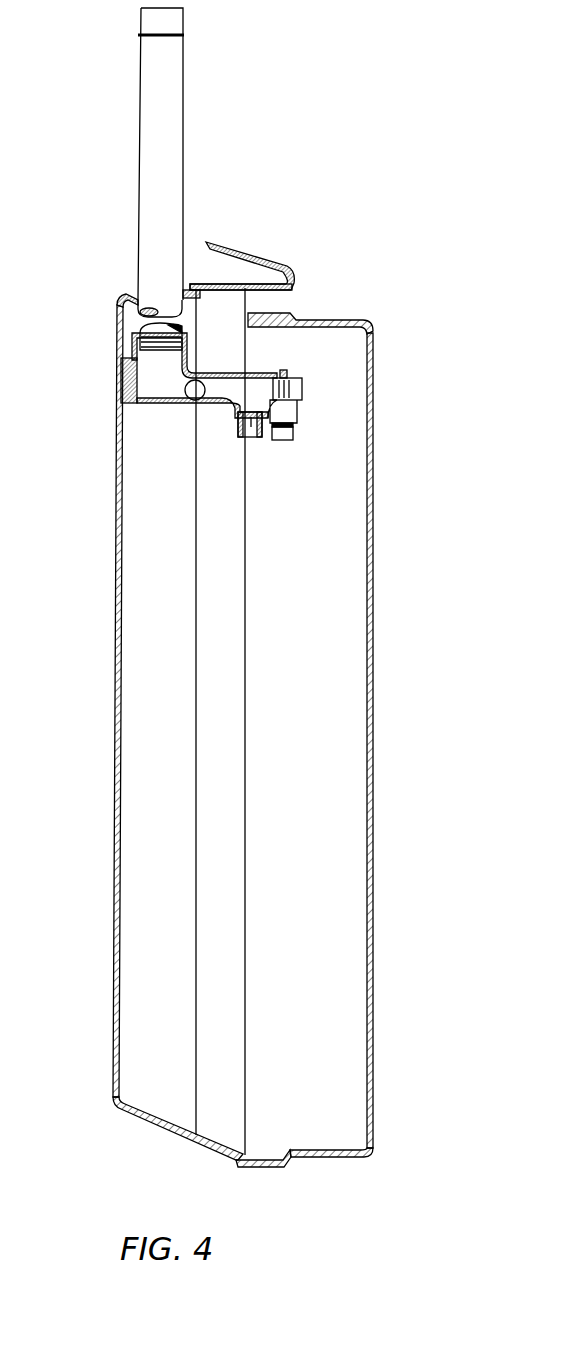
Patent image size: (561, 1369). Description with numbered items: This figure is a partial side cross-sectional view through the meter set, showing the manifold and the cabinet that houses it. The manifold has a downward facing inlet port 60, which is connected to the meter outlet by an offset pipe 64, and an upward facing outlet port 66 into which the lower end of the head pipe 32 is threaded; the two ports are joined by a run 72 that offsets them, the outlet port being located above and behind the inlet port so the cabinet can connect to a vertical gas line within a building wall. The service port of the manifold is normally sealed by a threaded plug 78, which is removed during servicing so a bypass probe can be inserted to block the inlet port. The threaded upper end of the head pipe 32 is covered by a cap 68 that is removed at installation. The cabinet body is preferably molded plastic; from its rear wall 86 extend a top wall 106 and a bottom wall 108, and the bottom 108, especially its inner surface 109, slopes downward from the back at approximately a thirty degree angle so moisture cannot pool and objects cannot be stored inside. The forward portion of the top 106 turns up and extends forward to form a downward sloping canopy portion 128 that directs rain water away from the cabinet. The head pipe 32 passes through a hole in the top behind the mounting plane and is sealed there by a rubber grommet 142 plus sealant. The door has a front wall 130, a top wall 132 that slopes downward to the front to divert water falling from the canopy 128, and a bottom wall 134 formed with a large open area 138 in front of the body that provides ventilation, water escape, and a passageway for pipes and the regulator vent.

The head pipe 32 is at (157, 113).
The cap 68 is at (163, 22).
The outlet port 66 is at (190, 323).
The rubber grommet 142 is at (199, 287).
The canopy portion 128 is at (250, 262).
The top wall 106 is at (233, 288).
The top wall of door 132 is at (346, 320).
The front wall 130 is at (372, 722).
The inner surface 109 is at (133, 1100).
The bottom wall 108 is at (168, 1128).
The bottom wall of door 134 is at (358, 1157).
The open area 138 is at (300, 1158).
The rear wall 86 is at (116, 422).
The run 72 is at (213, 406).
The inlet port 60 is at (233, 424).
The offset pipe 64 is at (253, 425).
The threaded plug 78 is at (297, 390).